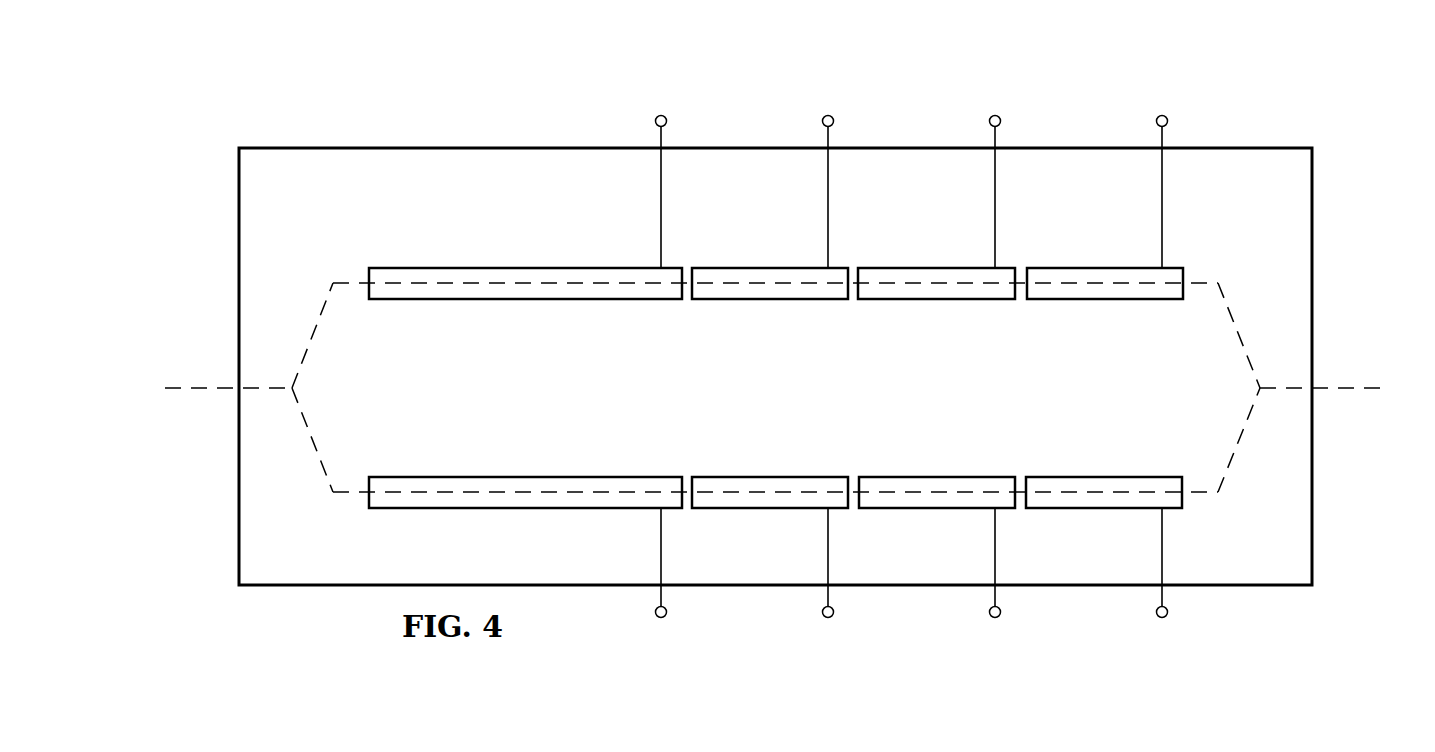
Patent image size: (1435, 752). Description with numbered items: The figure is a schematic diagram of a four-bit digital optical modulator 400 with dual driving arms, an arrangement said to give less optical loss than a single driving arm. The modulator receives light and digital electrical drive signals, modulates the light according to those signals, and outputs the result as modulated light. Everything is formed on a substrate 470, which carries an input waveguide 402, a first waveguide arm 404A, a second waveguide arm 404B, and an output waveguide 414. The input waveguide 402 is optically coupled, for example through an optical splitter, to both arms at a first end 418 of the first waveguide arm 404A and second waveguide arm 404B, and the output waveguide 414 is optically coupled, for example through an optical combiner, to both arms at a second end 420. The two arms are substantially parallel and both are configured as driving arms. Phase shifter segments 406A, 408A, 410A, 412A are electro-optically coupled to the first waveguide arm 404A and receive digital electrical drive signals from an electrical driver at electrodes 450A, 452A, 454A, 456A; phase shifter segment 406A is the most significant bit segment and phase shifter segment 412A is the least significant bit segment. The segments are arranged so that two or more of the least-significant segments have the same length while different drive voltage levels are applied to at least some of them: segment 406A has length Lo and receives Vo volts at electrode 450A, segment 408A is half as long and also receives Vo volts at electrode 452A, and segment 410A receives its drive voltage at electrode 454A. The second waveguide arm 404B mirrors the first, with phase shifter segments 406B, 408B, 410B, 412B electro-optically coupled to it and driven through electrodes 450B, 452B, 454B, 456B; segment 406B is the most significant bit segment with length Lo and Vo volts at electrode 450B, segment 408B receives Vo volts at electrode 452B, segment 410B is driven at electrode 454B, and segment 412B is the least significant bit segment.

The digital optical modulator 400 is at (323, 91).
The input waveguide 402 is at (215, 391).
The first waveguide arm 404A is at (343, 283).
The second waveguide arm 404B is at (343, 494).
The phase shifter segment 406A is at (427, 300).
The phase shifter segment 406B is at (427, 509).
The phase shifter segment 408A is at (725, 301).
The phase shifter segment 408B is at (713, 509).
The phase shifter segment 410A is at (982, 301).
The phase shifter segment 410B is at (880, 509).
The phase shifter segment 412A is at (1157, 301).
The phase shifter segment 412B is at (1047, 509).
The output waveguide 414 is at (1333, 391).
The first end 418 is at (291, 386).
The second end 420 is at (1263, 387).
The electrode 450A is at (656, 117).
The electrode 450B is at (657, 617).
The electrode 452A is at (853, 101).
The electrode 452B is at (833, 616).
The electrode 454A is at (1020, 101).
The electrode 454B is at (1000, 616).
The electrode 456A is at (1187, 101).
The electrode 456B is at (1167, 616).
The substrate 470 is at (420, 147).